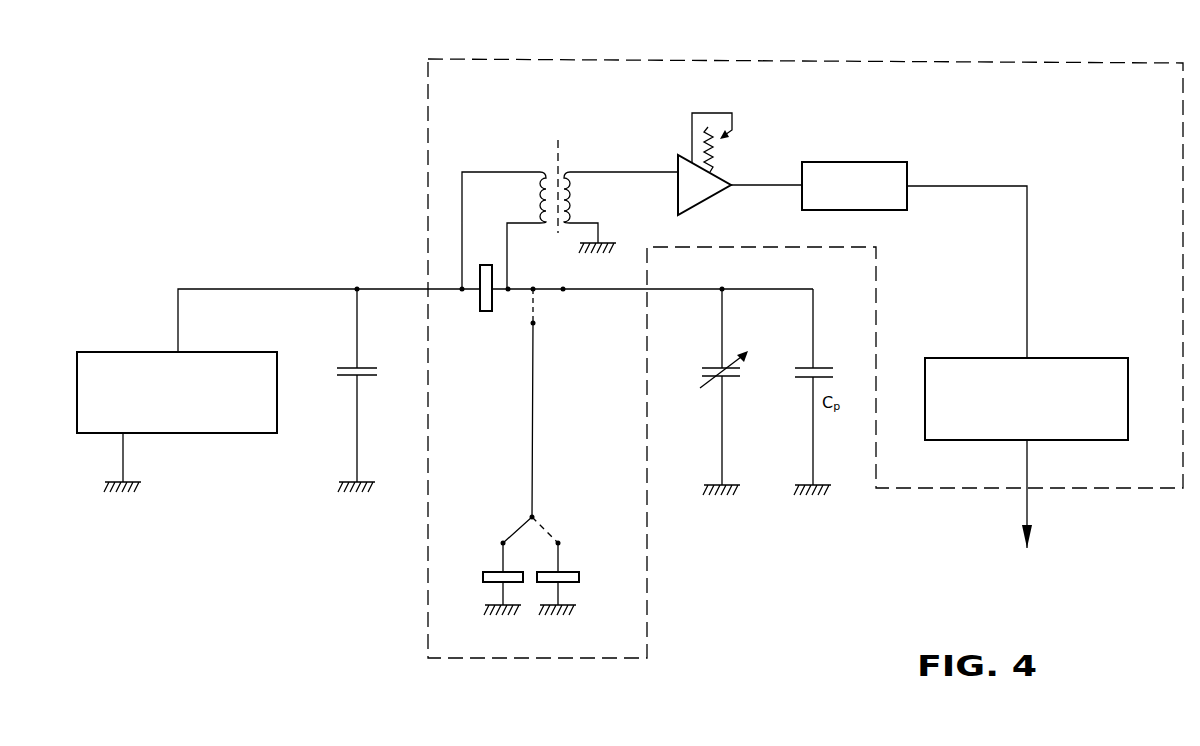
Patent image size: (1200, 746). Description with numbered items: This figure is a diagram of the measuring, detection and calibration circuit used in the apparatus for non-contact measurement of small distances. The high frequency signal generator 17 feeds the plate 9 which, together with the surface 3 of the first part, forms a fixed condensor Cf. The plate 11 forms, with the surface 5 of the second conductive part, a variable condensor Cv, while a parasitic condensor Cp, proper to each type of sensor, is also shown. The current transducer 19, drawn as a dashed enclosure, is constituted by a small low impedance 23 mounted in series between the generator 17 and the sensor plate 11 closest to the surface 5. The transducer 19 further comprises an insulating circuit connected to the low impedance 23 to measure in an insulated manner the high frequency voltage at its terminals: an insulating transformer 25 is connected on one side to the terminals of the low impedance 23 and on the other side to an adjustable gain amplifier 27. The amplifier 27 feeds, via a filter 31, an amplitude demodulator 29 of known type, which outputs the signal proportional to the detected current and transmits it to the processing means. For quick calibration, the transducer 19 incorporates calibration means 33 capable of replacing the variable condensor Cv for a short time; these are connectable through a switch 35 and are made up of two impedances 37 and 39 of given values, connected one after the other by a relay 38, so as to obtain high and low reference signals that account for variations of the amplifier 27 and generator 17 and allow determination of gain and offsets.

The current transducer 19 is at (500, 59).
The high frequency signal generator 17 is at (188, 433).
The plate 9 is at (371, 366).
The surface of a first part 3 is at (369, 378).
The low impedance 23 is at (492, 305).
The switch 35 is at (563, 289).
The insulating transformer 25 is at (560, 142).
The adjustable gain amplifier 27 is at (700, 202).
The filter 31 is at (849, 162).
The amplitude demodulator 29 is at (1095, 358).
The relay 38 is at (517, 527).
The calibration means 33 is at (559, 543).
The impedance 37 is at (483, 580).
The impedance 39 is at (579, 582).
The plate 11 is at (706, 366).
The surface of a second conductive part 5 is at (733, 378).